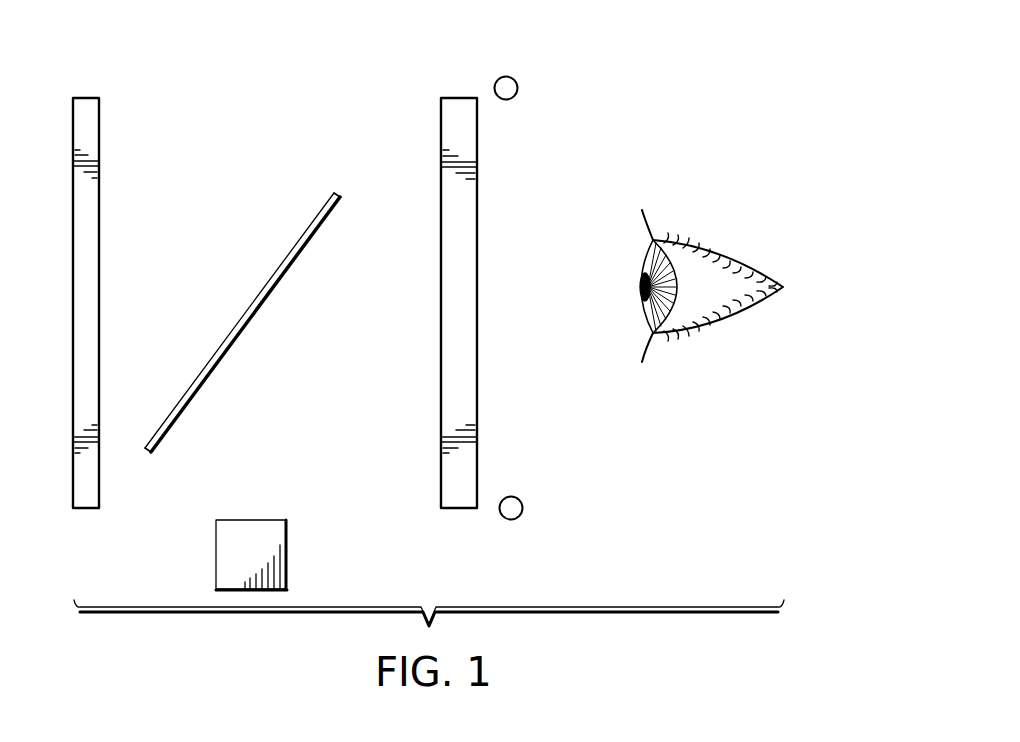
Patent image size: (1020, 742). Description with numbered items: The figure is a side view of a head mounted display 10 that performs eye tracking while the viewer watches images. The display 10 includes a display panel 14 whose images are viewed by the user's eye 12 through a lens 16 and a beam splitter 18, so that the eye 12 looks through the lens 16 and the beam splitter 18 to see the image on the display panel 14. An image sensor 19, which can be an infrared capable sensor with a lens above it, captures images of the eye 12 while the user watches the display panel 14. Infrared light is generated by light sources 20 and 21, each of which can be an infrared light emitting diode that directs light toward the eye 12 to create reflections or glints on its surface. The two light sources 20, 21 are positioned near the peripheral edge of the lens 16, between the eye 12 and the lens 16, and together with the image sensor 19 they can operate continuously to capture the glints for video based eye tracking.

The head mounted display 10 is at (651, 55).
The eye 12 is at (720, 262).
The display panel 14 is at (83, 98).
The lens 16 is at (458, 98).
The beam splitter 18 is at (247, 325).
The image sensor 19 is at (216, 555).
The light source 20 is at (518, 87).
The light source 21 is at (523, 509).